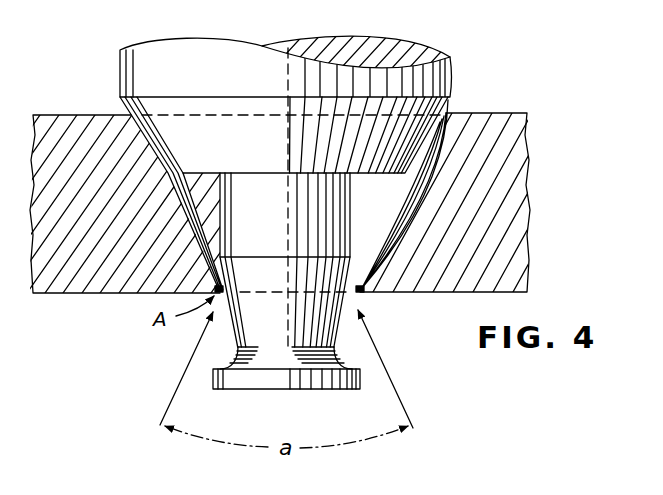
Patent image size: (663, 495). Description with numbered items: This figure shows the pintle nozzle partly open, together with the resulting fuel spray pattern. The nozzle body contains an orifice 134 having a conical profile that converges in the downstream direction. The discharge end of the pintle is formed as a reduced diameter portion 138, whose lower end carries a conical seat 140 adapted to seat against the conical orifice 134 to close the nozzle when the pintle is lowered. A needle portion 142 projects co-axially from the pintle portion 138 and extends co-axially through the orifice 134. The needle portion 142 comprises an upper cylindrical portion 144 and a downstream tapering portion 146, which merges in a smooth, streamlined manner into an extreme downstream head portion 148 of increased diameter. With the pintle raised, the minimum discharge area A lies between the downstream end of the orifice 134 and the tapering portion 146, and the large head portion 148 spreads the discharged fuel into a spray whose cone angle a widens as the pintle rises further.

The orifice 134 is at (178, 214).
The reduced diameter portion 138 is at (137, 63).
The conical seat 140 is at (215, 127).
The needle portion 142 is at (352, 210).
The upper cylindrical portion 144 is at (264, 230).
The tapering portion 146 is at (330, 328).
The head portion 148 is at (261, 381).